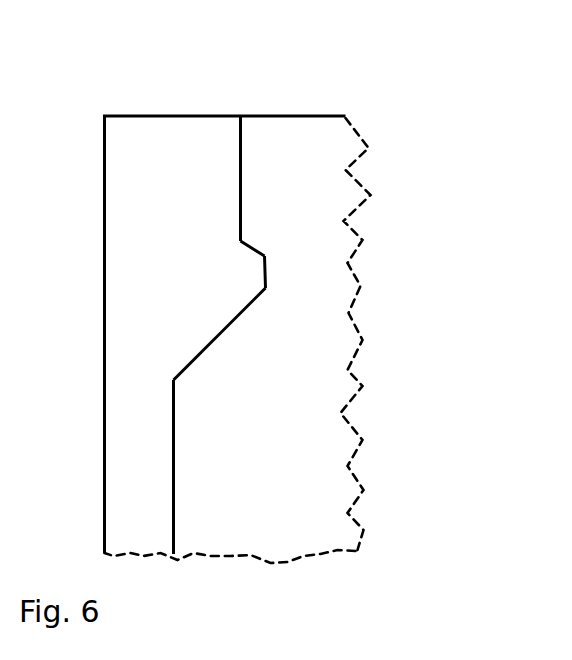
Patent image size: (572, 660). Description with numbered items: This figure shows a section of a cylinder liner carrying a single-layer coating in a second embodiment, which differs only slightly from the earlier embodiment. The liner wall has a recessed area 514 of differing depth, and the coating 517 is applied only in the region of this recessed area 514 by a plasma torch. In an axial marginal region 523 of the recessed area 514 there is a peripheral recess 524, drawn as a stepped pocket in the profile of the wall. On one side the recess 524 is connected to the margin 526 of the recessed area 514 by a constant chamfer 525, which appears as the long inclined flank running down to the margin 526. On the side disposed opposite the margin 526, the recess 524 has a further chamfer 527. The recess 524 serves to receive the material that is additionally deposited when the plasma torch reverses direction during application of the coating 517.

The coating 517 is at (112, 125).
The recessed area 514 is at (220, 151).
The chamfer 527 is at (250, 245).
The peripheral recess 524 is at (252, 273).
The axial marginal region 523 is at (300, 286).
The constant chamfer 525 is at (220, 330).
The margin 526 is at (175, 380).